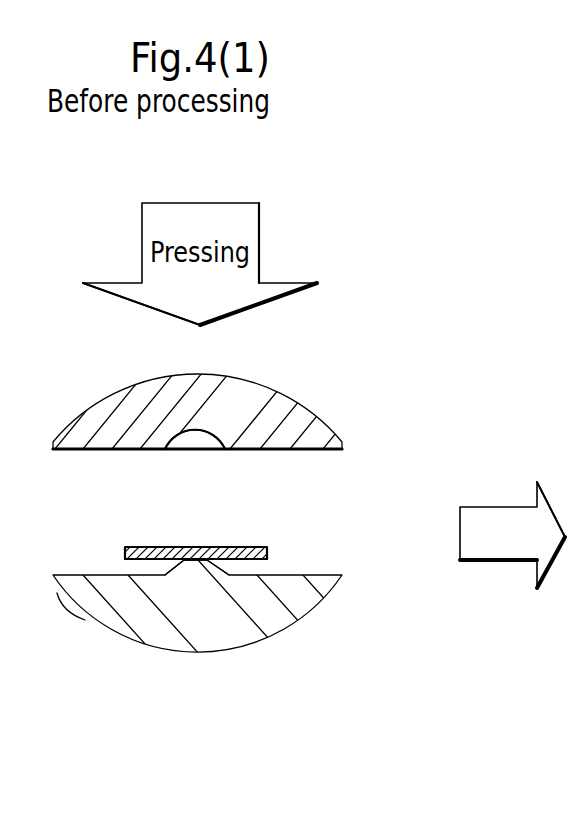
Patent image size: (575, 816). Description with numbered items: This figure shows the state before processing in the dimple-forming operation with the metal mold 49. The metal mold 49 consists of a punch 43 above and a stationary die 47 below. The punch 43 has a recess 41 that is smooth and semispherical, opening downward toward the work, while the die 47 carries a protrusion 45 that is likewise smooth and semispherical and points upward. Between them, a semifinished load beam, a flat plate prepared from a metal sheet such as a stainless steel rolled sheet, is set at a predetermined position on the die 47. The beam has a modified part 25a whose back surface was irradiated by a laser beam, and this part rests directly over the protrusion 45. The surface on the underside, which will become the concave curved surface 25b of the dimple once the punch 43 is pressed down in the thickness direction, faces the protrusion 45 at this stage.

The metal mold 49 is at (440, 376).
The punch 43 is at (283, 400).
The recess 41 is at (217, 450).
The part 25a is at (190, 546).
The concave curved surface 25b is at (195, 559).
The protrusion 45 is at (227, 568).
The stationary die 47 is at (303, 607).